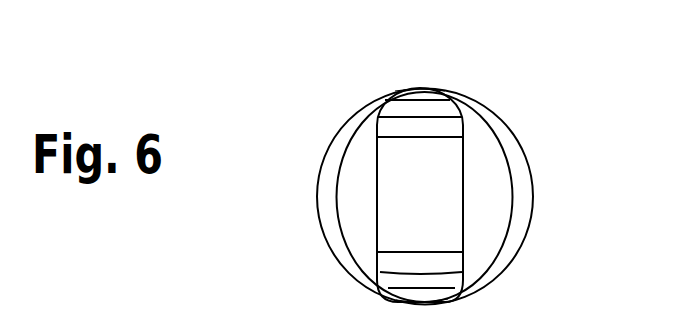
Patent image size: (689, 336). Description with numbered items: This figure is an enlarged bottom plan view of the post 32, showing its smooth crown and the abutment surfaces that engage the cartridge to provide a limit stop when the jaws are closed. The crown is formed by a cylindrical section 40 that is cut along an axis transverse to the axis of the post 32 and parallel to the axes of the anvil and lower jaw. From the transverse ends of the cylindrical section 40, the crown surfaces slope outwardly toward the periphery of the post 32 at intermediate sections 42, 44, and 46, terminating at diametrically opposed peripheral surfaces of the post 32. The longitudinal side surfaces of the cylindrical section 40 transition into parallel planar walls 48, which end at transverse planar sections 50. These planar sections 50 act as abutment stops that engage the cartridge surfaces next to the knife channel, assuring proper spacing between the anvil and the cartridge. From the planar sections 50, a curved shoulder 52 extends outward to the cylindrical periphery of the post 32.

The post 32 is at (320, 227).
The cylindrical section 40 is at (410, 160).
The intermediate section 42 is at (443, 123).
The intermediate section 44 is at (440, 112).
The intermediate section 46 is at (414, 95).
The parallel planar walls 48 is at (465, 193).
The transverse planar sections 50 is at (358, 198).
The curved shoulder 52 is at (510, 234).